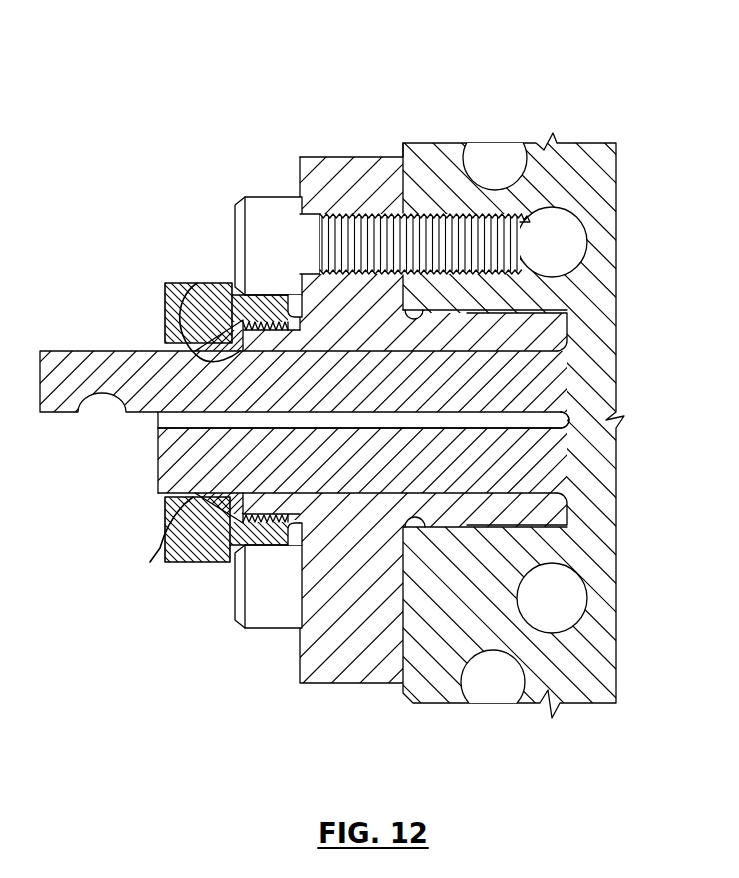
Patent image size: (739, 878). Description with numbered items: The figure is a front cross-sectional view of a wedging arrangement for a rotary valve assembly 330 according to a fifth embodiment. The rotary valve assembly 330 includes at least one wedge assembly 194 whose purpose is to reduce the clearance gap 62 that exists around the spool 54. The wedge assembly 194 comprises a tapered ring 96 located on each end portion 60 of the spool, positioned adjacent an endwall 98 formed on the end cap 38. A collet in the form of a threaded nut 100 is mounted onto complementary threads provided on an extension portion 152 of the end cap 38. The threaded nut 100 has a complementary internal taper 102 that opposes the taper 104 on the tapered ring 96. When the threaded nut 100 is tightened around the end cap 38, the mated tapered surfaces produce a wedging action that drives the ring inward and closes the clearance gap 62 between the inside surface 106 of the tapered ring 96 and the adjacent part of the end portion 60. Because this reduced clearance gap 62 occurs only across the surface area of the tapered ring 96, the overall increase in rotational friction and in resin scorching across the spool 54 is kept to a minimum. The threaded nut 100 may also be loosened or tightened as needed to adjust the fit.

The rotary valve assembly 330 is at (588, 103).
The end cap 38 is at (333, 168).
The spool 54 is at (587, 387).
The clearance gap 62 is at (207, 487).
The extension portion 152 is at (297, 293).
The wedge assembly 194 is at (178, 134).
The threaded nut 100 is at (173, 298).
The internal taper 102 is at (203, 327).
The inside surface 106 is at (177, 353).
The end portion 60 is at (295, 525).
The tapered ring 96 is at (165, 523).
The taper 104 is at (227, 512).
The endwall 98 is at (218, 523).